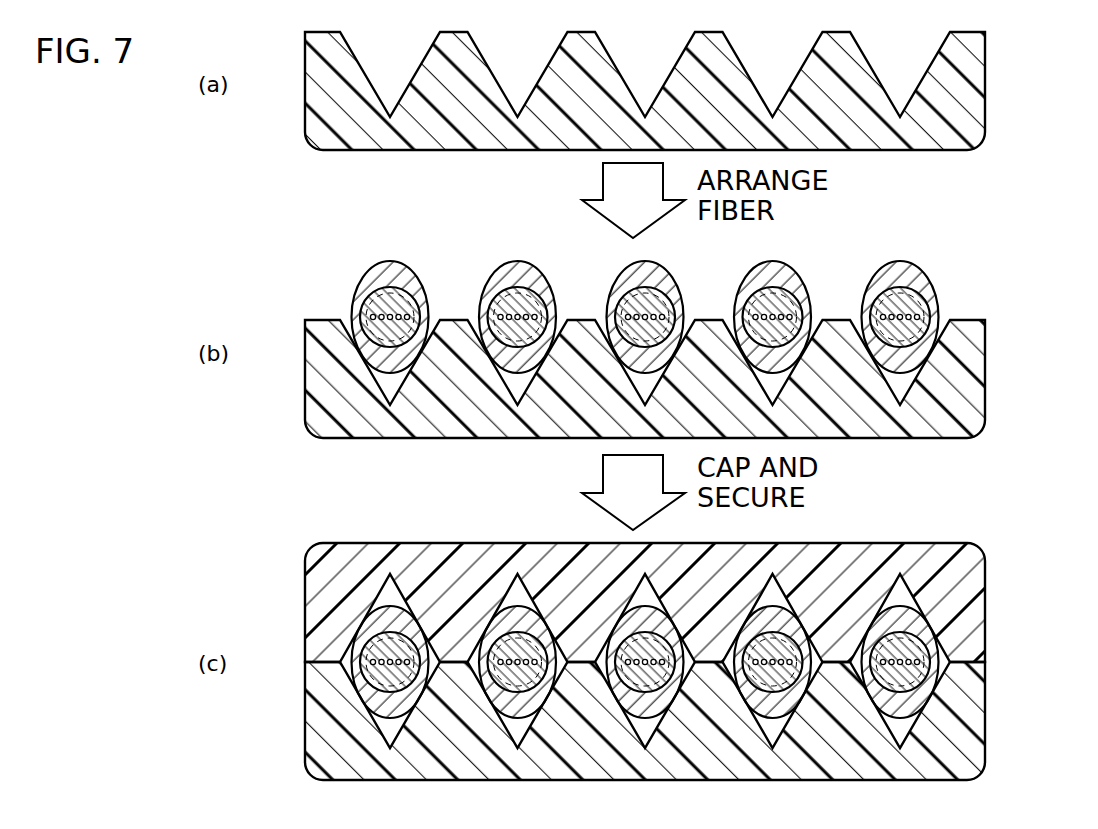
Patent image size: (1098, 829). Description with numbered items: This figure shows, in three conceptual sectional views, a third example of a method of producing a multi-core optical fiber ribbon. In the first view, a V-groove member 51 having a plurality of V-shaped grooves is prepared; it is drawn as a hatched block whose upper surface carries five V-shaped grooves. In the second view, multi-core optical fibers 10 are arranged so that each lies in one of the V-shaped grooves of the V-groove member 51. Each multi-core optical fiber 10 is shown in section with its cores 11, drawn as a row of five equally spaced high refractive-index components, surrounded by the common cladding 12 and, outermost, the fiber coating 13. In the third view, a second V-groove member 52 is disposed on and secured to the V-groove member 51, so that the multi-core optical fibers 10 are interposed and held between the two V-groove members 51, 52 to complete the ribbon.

The multi-core optical fiber 10 is at (692, 447).
The core 11 is at (917, 315).
The cladding 12 is at (900, 302).
The fiber coating 13 is at (883, 292).
The V-groove member 51 is at (973, 92).
The V-groove member 52 is at (975, 620).